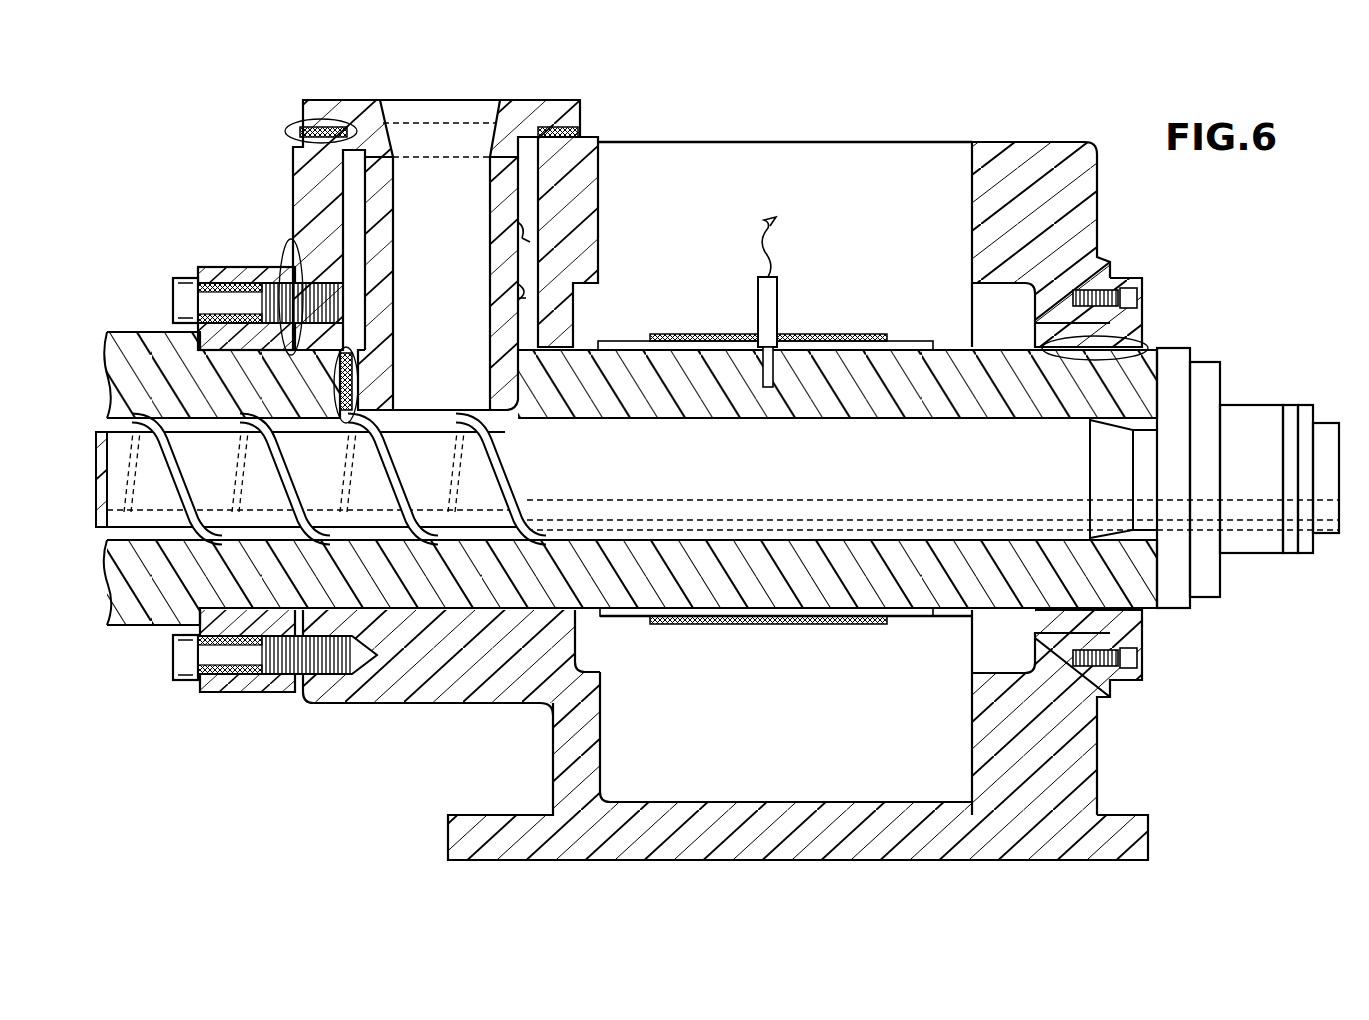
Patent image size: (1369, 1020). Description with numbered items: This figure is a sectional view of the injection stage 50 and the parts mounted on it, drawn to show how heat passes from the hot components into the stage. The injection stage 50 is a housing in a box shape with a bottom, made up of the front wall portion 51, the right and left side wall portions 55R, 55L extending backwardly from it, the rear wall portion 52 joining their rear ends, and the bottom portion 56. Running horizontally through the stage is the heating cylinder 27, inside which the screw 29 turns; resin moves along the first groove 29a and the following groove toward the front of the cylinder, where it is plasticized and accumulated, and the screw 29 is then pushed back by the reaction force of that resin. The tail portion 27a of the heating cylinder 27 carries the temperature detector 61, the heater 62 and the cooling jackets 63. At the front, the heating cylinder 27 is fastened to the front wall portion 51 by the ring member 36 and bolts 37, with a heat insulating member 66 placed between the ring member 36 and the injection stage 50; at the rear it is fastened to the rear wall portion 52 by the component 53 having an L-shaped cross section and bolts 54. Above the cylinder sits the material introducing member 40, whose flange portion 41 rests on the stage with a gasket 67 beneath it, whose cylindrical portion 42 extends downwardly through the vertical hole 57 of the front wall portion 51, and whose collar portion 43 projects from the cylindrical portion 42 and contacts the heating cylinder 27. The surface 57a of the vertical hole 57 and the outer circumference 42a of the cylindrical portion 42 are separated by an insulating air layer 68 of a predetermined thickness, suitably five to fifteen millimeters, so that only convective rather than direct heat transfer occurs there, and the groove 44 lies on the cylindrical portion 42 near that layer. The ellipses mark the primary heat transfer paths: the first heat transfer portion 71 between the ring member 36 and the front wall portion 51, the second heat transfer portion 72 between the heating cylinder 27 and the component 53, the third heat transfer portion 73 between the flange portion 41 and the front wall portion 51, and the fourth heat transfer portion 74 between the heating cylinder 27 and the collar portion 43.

The heating cylinder 27 is at (162, 343).
The tail portion 27a is at (850, 592).
The screw 29 is at (135, 463).
The first groove 29a is at (507, 470).
The ring member 36 is at (223, 268).
The bolts 37 is at (170, 285).
The material introducing member 40 is at (462, 230).
The flange portion 41 is at (556, 112).
The cylindrical portion 42 is at (500, 243).
The outer circumference 42a is at (527, 292).
The collar portion 43 is at (370, 382).
The nozzle step 44 is at (464, 308).
The injection stage 50 is at (827, 483).
The front wall portion 51 is at (435, 680).
The rear wall portion 52 is at (1058, 753).
The component having L-shaped cross section 53 is at (1143, 342).
The bolts 54 is at (1141, 296).
The left side wall portion 55L is at (777, 170).
The right side wall portion 55R is at (786, 351).
The bottom portion 56 is at (790, 835).
The vertical hole 57 is at (533, 228).
The surface 57a is at (617, 240).
The temperature detector 61 is at (778, 300).
The heater 62 is at (843, 336).
The cooling jackets 63 is at (905, 341).
The heat insulating member 66 is at (290, 262).
The gasket 67 is at (581, 133).
The insulating air layer 68 is at (527, 200).
The first heat transfer portion 71 is at (293, 283).
The second heat transfer portion 72 is at (1070, 360).
The third heat transfer portion 73 is at (302, 130).
The fourth heat transfer portion 74 is at (358, 362).